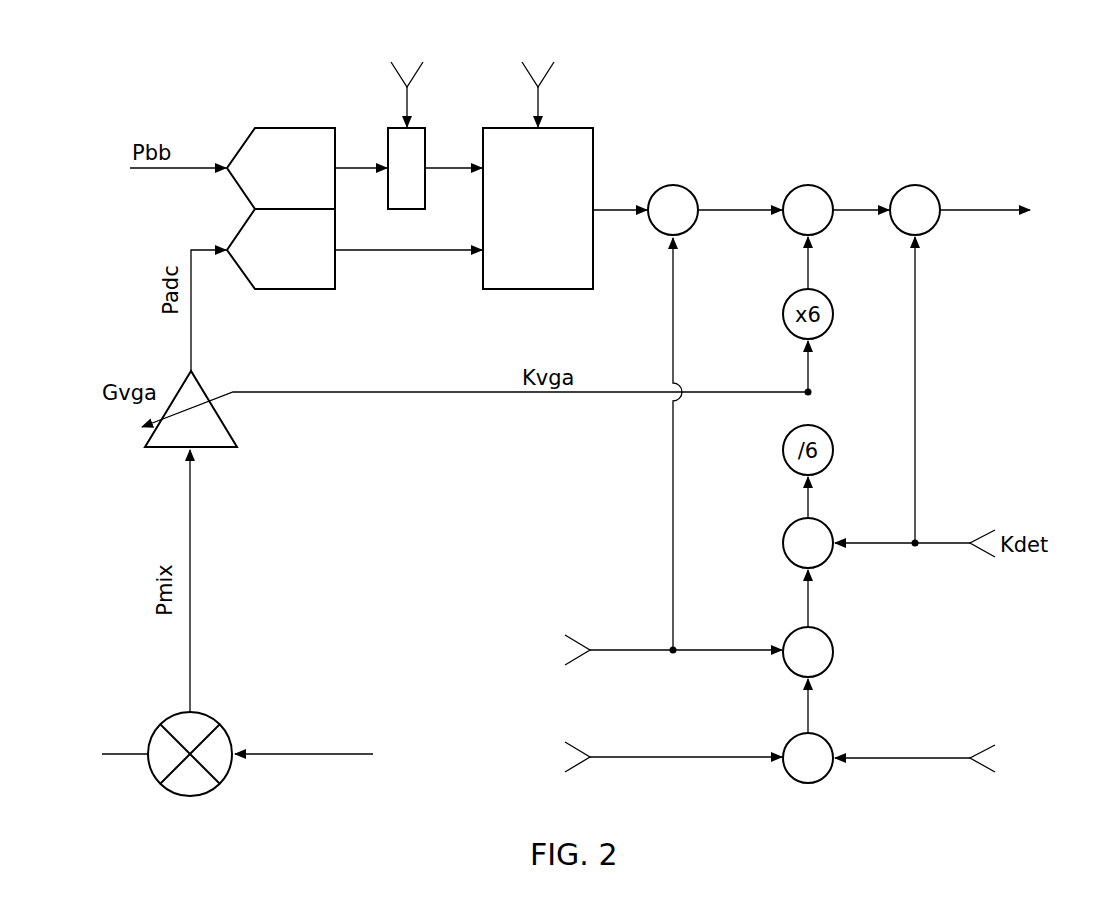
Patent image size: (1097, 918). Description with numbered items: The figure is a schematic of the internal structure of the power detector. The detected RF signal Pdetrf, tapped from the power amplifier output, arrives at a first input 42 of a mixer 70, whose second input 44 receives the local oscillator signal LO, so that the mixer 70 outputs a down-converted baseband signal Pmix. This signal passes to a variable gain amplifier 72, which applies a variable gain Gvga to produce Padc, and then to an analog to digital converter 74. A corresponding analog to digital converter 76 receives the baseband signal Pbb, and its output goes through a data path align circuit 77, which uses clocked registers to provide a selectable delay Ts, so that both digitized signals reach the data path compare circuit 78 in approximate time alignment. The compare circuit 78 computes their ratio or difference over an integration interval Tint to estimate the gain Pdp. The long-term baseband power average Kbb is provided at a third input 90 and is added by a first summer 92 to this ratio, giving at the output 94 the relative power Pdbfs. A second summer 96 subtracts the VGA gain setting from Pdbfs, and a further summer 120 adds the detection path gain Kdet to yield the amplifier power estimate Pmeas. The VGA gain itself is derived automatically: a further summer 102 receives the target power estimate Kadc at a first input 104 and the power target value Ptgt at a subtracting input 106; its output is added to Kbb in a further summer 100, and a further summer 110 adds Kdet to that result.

The first input 42 is at (233, 762).
The second input 44 is at (146, 764).
The mixer 70 is at (212, 722).
The variable gain amplifier 72 is at (237, 447).
The analog to digital converter 74 is at (297, 290).
The analog to digital converter 76 is at (297, 128).
The data path align circuit 77 is at (425, 128).
The data path compare circuit 78 is at (541, 290).
The third input 90 is at (563, 652).
The first summer 92 is at (668, 185).
The output 94 is at (718, 206).
The second summer 96 is at (810, 185).
The further summer 100 is at (835, 650).
The further summer 102 is at (811, 784).
The first input 104 is at (779, 764).
The subtracting input 106 is at (835, 752).
The further summer 110 is at (785, 545).
The further summer 120 is at (914, 185).